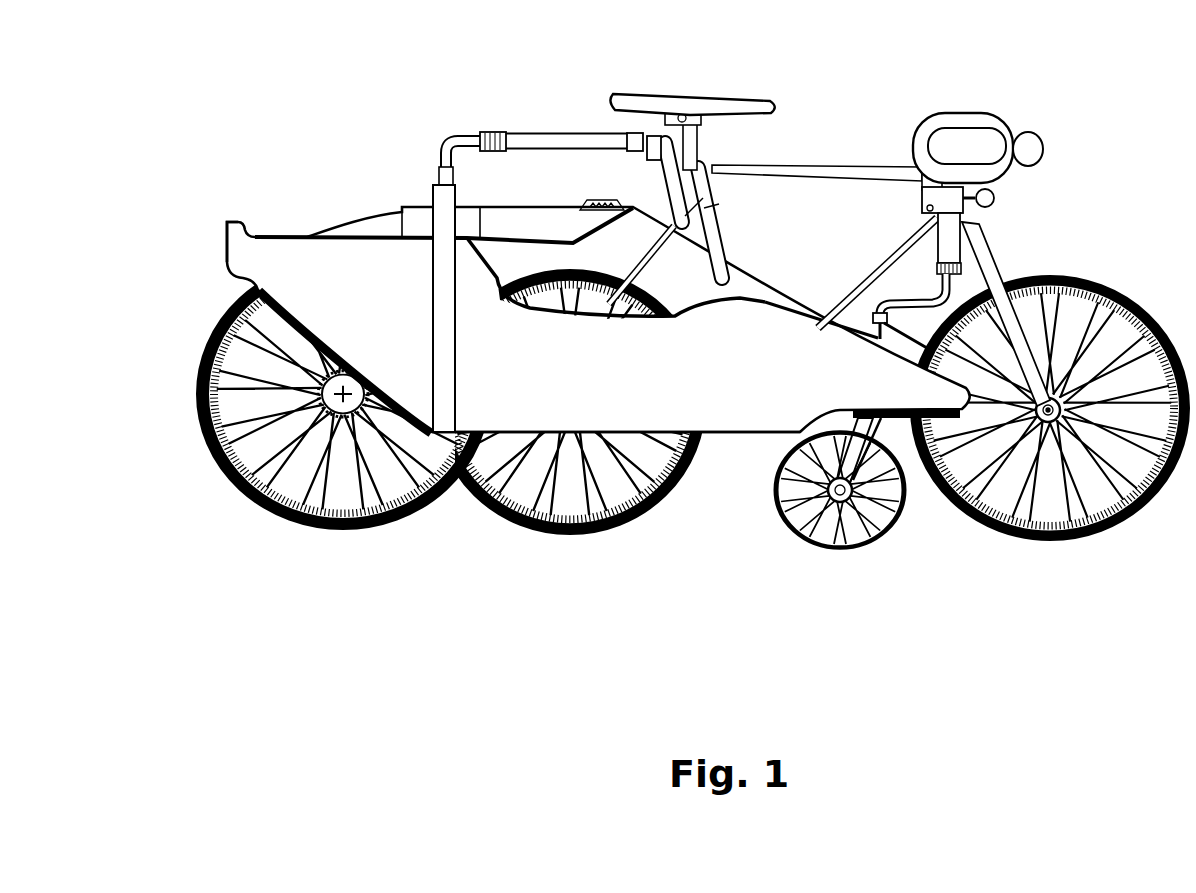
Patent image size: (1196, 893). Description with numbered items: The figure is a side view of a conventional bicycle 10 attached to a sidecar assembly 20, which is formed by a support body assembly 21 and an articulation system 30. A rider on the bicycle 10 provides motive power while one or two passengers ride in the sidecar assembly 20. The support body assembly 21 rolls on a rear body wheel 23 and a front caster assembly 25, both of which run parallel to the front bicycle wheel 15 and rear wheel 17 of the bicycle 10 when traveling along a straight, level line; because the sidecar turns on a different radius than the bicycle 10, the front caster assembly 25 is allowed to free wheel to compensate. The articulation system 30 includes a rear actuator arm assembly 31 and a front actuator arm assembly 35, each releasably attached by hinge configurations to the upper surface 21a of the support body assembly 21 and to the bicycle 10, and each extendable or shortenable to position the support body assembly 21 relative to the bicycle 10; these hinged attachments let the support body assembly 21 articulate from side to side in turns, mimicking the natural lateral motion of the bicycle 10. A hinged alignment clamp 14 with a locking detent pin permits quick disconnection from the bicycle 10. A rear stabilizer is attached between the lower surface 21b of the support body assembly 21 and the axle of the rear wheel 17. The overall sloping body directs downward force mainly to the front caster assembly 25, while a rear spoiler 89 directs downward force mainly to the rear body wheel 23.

The bicycle 10 is at (806, 37).
The hinged alignment clamp 14 is at (693, 141).
The front bicycle wheel 15 is at (1072, 545).
The rear wheel 17 is at (527, 522).
The sidecar assembly 20 is at (266, 115).
The support body assembly 21 is at (562, 356).
The upper surface 21a is at (787, 306).
The lower surface 21b is at (752, 436).
The rear body wheel 23 is at (305, 514).
The front caster assembly 25 is at (840, 550).
The articulation system 30 is at (1032, 232).
The rear actuator arm assembly 31 is at (543, 132).
The front actuator arm assembly 35 is at (908, 247).
The rear spoiler 89 is at (196, 221).